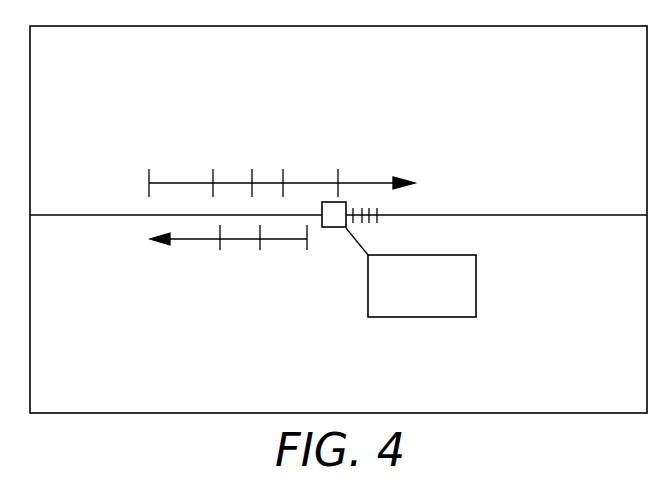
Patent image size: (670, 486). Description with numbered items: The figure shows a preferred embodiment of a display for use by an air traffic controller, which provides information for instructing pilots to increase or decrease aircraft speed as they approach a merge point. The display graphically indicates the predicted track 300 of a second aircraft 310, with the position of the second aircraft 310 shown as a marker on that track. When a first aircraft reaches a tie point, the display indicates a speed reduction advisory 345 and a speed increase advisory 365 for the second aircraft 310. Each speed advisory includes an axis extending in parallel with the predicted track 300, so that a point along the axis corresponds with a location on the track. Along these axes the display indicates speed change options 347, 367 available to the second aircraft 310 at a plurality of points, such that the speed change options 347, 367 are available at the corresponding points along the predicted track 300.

The predicted track 300 is at (575, 214).
The second aircraft 310 is at (348, 229).
The speed reduction advisory 345 is at (149, 188).
The speed change options 347 is at (213, 183).
The speed increase advisory 365 is at (160, 244).
The speed change options 367 is at (219, 250).